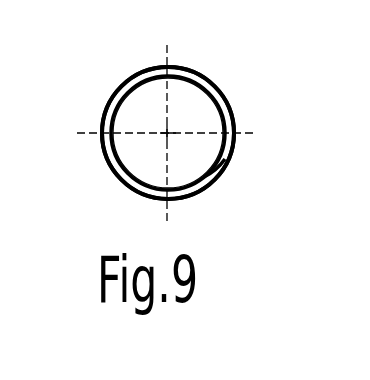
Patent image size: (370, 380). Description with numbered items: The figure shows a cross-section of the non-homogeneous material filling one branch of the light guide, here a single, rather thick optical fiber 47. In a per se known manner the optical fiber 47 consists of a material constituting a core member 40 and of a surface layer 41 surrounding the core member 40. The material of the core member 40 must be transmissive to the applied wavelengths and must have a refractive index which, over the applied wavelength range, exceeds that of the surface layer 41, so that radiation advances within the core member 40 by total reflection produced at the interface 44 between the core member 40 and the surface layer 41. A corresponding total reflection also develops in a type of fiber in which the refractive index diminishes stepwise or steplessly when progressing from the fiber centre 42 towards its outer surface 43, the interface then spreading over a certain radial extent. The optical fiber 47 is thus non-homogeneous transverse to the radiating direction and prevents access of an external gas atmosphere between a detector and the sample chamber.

The core member 40 is at (188, 125).
The surface layer 41 is at (224, 159).
The fiber centre 42 is at (166, 137).
The outer surface 43 is at (213, 79).
The interface 44 is at (204, 177).
The optical fiber 47 is at (113, 78).